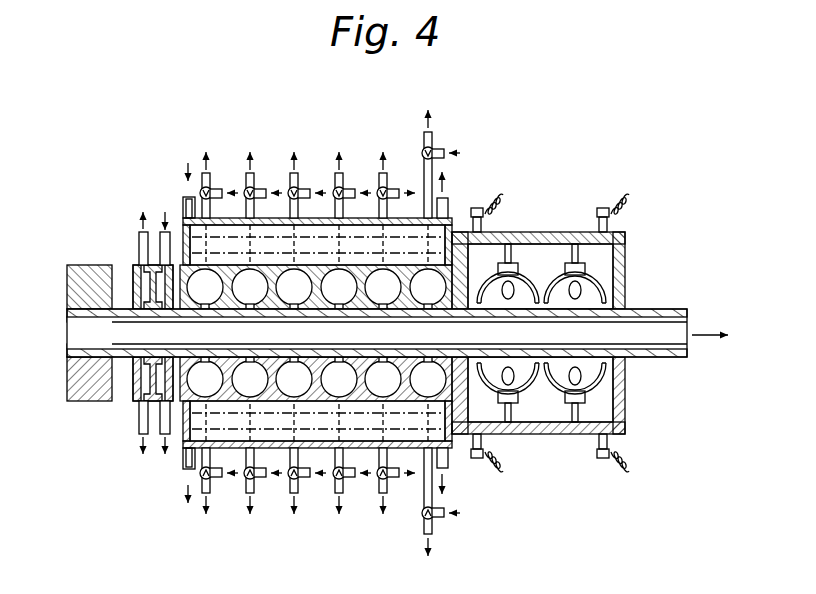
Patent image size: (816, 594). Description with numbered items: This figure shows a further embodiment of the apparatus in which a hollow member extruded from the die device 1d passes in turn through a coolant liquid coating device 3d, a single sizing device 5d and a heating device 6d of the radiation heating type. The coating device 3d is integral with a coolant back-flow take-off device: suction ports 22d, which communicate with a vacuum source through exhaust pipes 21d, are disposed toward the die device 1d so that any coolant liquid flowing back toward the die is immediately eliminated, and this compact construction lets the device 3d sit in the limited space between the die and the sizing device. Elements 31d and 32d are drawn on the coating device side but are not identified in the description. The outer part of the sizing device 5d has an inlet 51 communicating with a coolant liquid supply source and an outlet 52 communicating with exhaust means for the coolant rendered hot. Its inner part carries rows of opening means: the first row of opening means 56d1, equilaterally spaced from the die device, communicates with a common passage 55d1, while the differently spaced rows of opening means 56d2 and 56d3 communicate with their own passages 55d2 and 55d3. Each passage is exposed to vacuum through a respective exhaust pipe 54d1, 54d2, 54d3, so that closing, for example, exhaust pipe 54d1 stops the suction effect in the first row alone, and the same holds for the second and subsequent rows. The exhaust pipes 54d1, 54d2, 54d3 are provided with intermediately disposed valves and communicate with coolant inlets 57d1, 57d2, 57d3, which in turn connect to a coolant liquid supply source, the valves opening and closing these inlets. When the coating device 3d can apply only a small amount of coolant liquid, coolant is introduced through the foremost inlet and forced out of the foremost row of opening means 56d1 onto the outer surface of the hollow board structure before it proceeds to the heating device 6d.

The die device 1d is at (92, 167).
The coolant liquid coating device 3d is at (157, 167).
The exhaust pipes 21d is at (94, 302).
The suction ports 22d is at (150, 312).
The inlet conduit 31d is at (165, 232).
The outlet conduit 32d is at (127, 345).
The sizing device 5d is at (308, 136).
The inlet 51 is at (188, 196).
The outlet 52 is at (443, 198).
The exhaust pipe 54d1 is at (210, 178).
The exhaust pipe 54d2 is at (257, 168).
The exhaust pipe 54d3 is at (299, 178).
The coolant inlet 57d1 is at (223, 189).
The coolant inlet 57d2 is at (263, 182).
The coolant inlet 57d3 is at (310, 186).
The common passage 55d1 is at (197, 291).
The passage 55d2 is at (228, 264).
The passage 55d3 is at (388, 299).
The opening means 56d1 is at (250, 303).
The opening means 56d2 is at (308, 301).
The opening means 56d3 is at (307, 286).
The heating device 6d is at (540, 172).